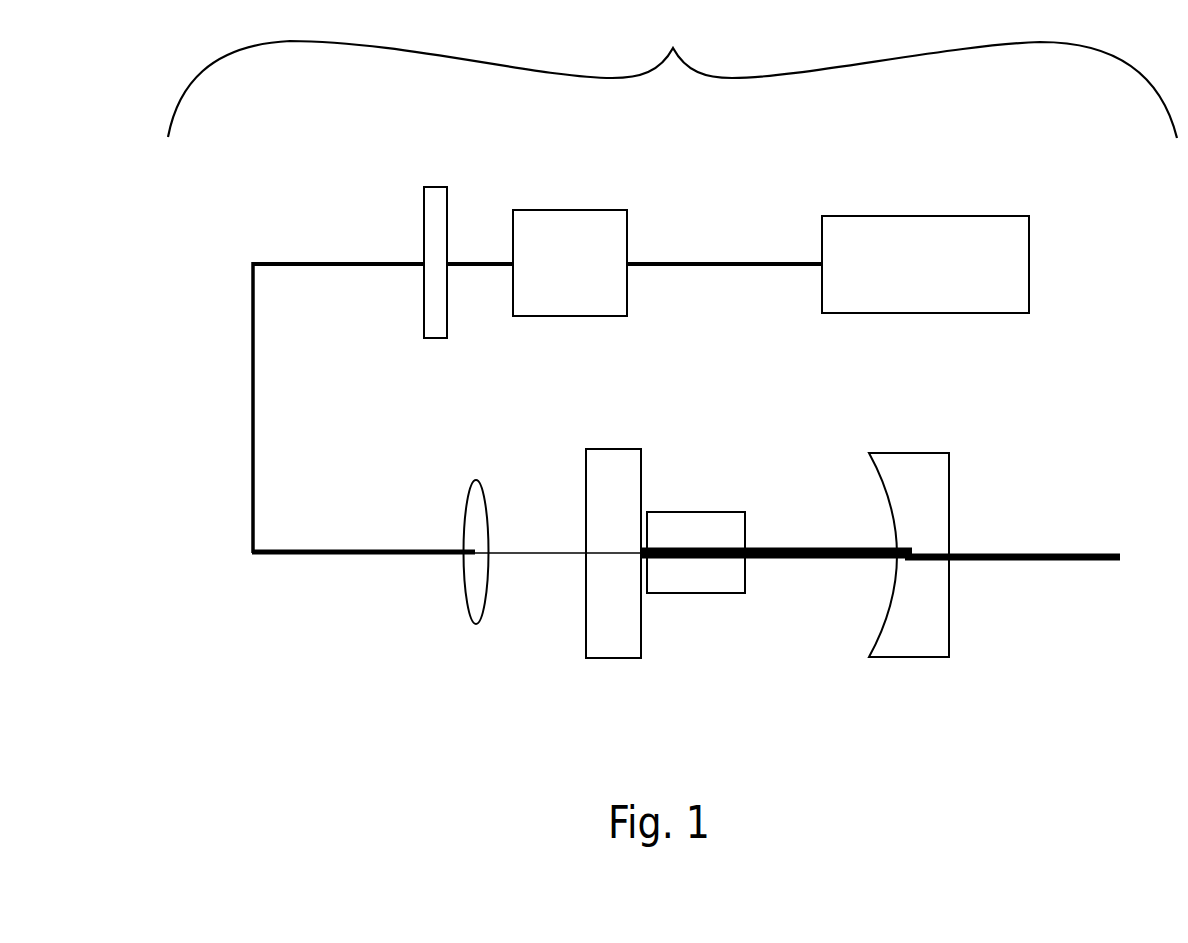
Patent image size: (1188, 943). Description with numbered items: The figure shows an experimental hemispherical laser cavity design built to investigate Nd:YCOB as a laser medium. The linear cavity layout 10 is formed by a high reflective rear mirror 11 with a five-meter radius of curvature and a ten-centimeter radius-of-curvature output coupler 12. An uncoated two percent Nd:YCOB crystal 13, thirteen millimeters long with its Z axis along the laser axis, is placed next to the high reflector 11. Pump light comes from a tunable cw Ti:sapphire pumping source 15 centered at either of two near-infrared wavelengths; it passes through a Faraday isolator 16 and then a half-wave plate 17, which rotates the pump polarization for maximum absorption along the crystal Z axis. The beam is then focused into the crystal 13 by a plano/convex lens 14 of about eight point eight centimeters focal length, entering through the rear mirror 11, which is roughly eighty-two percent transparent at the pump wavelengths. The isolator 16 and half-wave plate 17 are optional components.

The linear cavity layout 10 is at (672, 69).
The high reflective rear mirror 11 is at (600, 637).
The output coupler 12 is at (920, 635).
The Nd:YCOB crystal 13 is at (727, 588).
The plano/convex lens 14 is at (477, 593).
The tunable Ti:sapphire pumping source 15 is at (983, 221).
The Faraday isolator 16 is at (557, 233).
The half-wave plate 17 is at (437, 222).